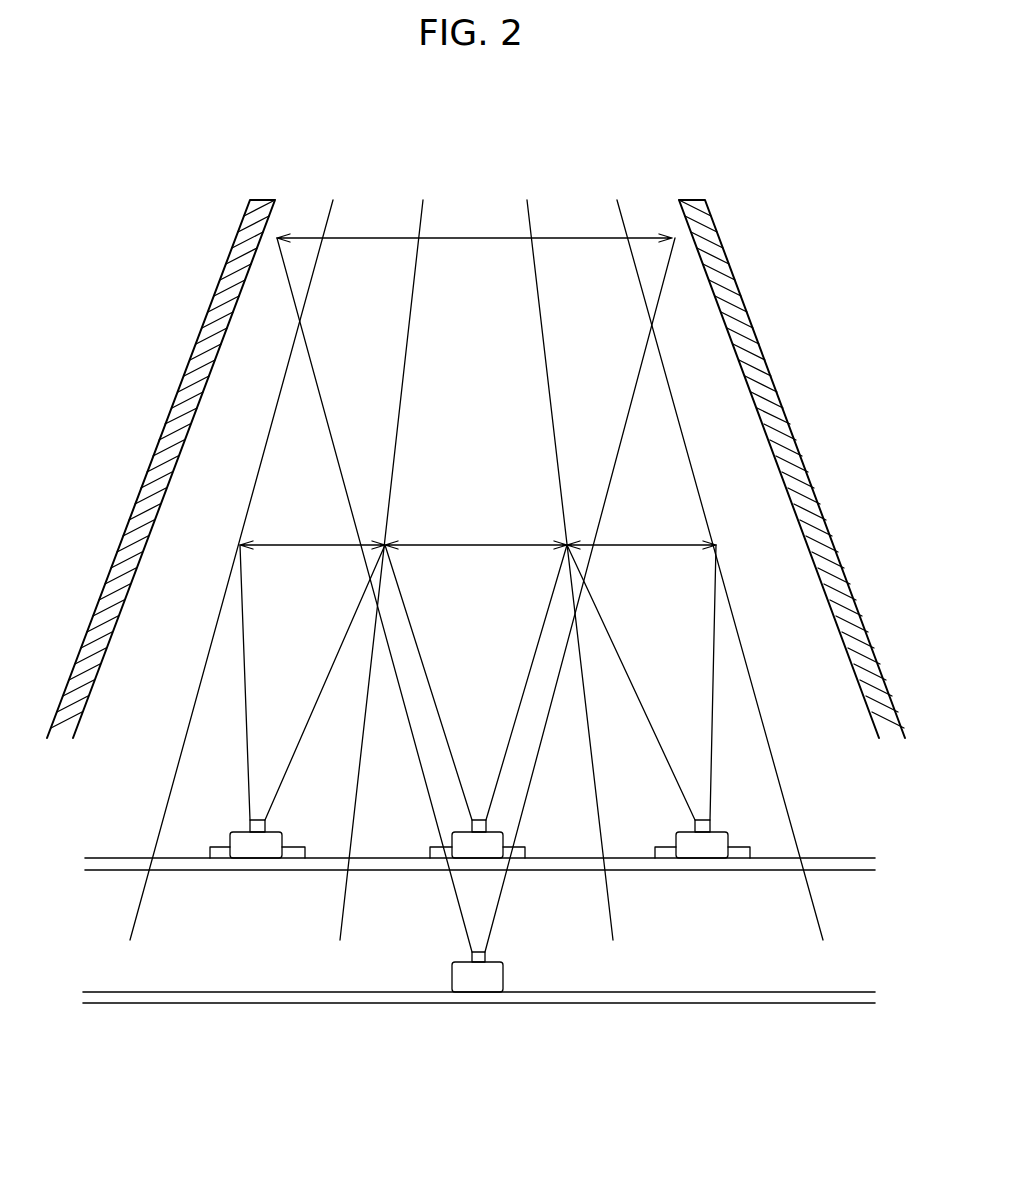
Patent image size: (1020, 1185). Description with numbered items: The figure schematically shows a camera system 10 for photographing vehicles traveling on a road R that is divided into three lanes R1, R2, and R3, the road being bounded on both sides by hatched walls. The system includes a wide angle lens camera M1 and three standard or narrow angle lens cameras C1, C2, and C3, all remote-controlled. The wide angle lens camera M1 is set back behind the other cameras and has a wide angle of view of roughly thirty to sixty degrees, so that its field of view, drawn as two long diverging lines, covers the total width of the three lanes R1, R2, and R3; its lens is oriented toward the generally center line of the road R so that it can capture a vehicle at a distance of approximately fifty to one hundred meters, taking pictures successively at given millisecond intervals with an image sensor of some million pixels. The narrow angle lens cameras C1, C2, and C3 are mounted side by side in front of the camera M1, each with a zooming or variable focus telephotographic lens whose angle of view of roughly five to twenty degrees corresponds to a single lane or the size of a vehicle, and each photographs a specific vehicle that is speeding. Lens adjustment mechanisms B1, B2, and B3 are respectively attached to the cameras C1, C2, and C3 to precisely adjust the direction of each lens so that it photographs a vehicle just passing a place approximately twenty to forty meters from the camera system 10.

The road R is at (188, 338).
The lane R1 is at (276, 549).
The lane R2 is at (476, 549).
The lane R3 is at (675, 549).
The narrow angle lens camera C1 is at (257, 848).
The narrow angle lens camera C2 is at (478, 847).
The narrow angle lens camera C3 is at (700, 848).
The lens adjustment mechanism B1 is at (292, 848).
The lens adjustment mechanism B2 is at (527, 846).
The lens adjustment mechanism B3 is at (740, 848).
The wide angle lens camera M1 is at (478, 978).
The camera system 10 is at (253, 1040).